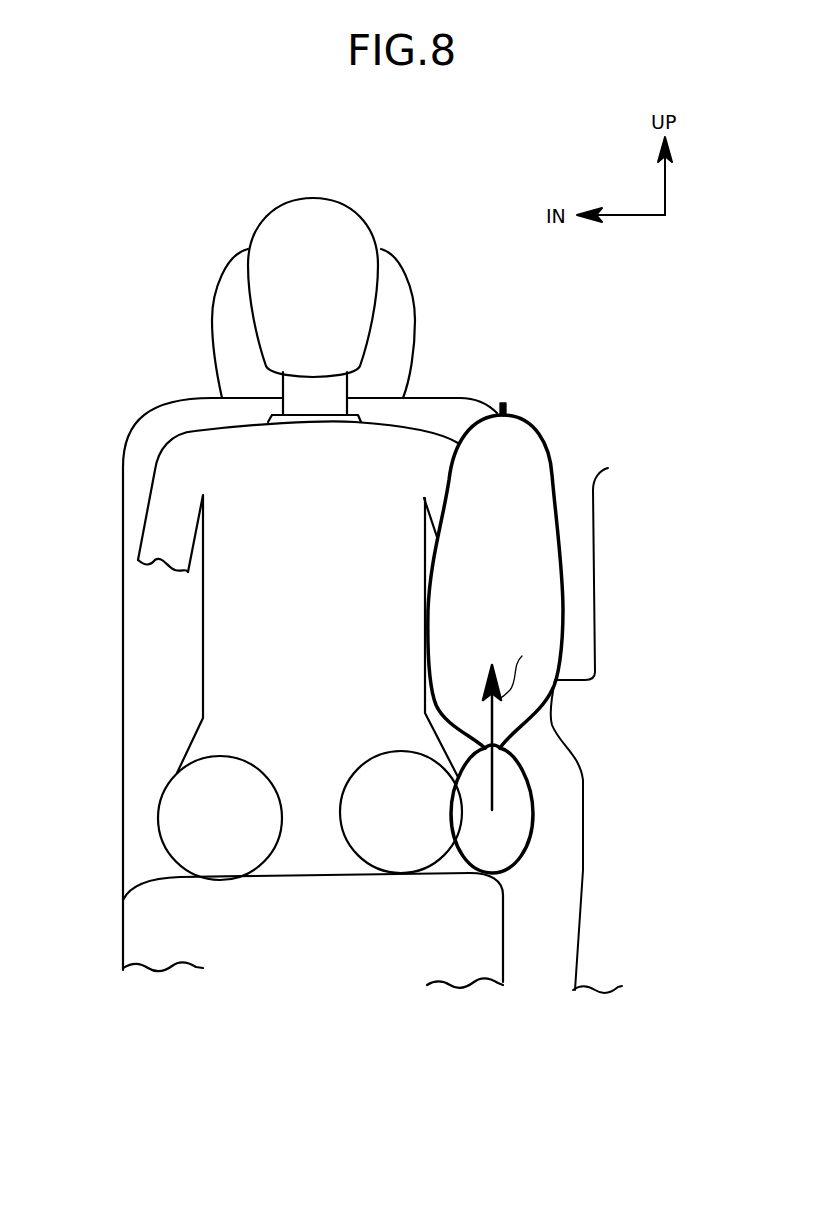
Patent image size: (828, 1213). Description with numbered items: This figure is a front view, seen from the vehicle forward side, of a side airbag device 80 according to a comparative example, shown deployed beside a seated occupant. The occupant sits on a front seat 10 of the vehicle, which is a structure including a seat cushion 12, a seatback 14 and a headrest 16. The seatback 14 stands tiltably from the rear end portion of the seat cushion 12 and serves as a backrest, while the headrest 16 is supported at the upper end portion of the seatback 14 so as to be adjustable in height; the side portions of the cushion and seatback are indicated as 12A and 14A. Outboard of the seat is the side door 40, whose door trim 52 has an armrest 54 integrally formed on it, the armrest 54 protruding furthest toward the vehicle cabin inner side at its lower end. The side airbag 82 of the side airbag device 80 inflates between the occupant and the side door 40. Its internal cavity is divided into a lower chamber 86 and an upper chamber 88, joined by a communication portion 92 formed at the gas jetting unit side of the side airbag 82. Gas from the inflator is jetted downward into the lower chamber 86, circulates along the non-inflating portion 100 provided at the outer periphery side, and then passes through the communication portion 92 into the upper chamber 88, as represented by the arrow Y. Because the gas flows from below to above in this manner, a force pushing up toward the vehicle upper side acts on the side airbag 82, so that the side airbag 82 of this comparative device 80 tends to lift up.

The front seat 10 is at (130, 398).
The seat cushion 12 is at (123, 935).
The side portion of seat cushion 12A is at (500, 917).
The seatback 14 is at (122, 720).
The side portion of seat back 14A is at (463, 397).
The headrest 16 is at (212, 353).
The side door 40 is at (559, 756).
The door trim 52 is at (578, 938).
The armrest 54 is at (577, 683).
The side airbag device 80 is at (582, 452).
The side airbag 82 is at (547, 438).
The lower chamber 86 is at (507, 844).
The upper chamber 88 is at (512, 516).
The communication portion 92 is at (507, 734).
The non-inflating portion 100 is at (505, 403).